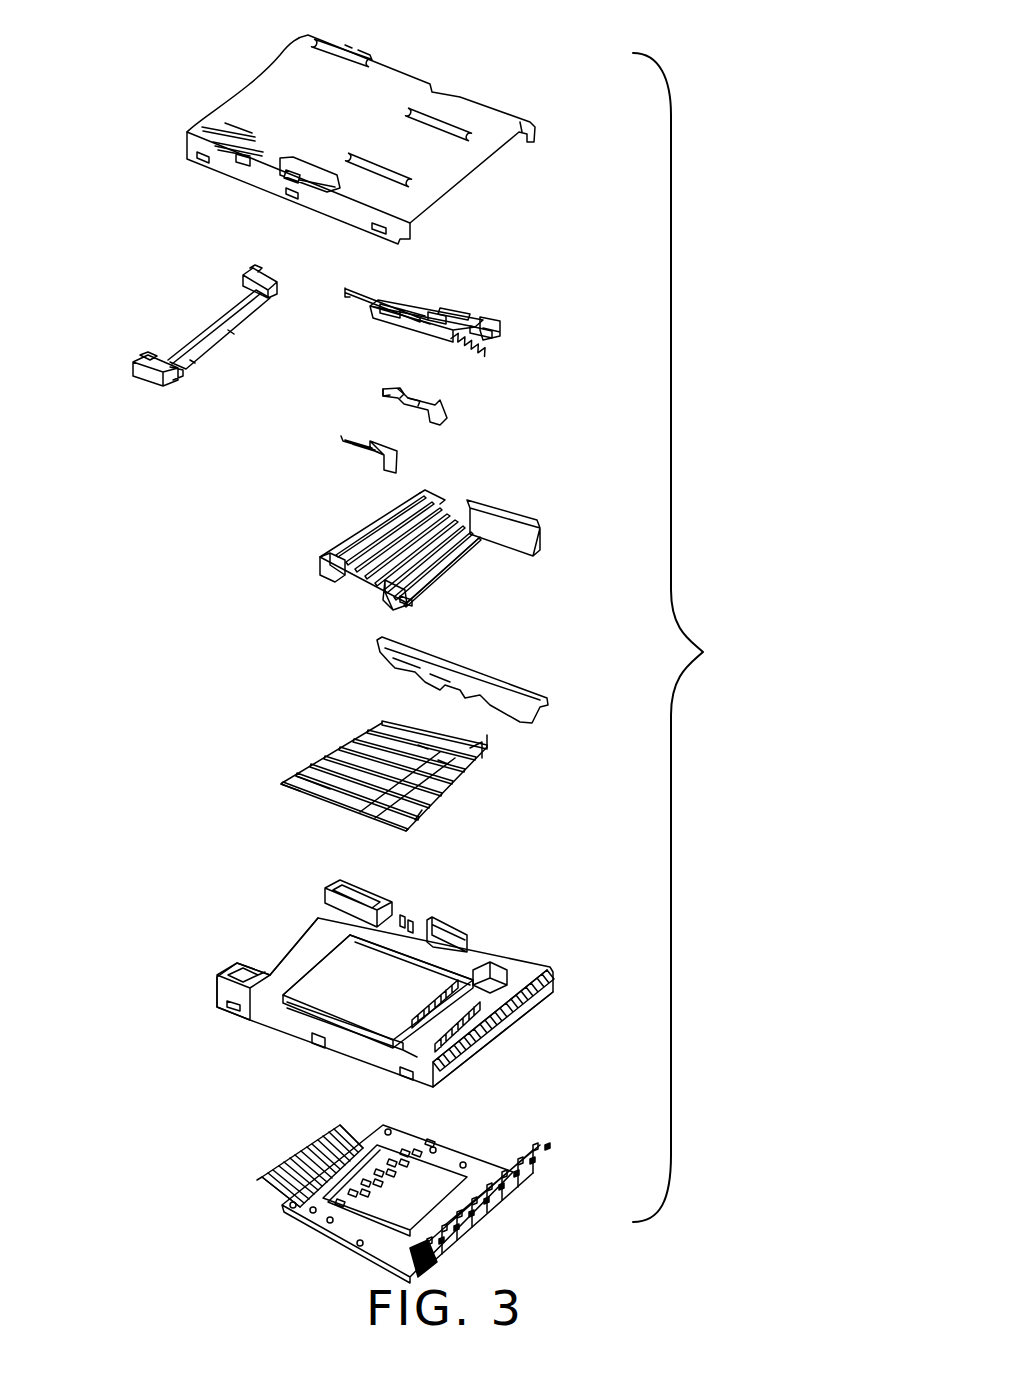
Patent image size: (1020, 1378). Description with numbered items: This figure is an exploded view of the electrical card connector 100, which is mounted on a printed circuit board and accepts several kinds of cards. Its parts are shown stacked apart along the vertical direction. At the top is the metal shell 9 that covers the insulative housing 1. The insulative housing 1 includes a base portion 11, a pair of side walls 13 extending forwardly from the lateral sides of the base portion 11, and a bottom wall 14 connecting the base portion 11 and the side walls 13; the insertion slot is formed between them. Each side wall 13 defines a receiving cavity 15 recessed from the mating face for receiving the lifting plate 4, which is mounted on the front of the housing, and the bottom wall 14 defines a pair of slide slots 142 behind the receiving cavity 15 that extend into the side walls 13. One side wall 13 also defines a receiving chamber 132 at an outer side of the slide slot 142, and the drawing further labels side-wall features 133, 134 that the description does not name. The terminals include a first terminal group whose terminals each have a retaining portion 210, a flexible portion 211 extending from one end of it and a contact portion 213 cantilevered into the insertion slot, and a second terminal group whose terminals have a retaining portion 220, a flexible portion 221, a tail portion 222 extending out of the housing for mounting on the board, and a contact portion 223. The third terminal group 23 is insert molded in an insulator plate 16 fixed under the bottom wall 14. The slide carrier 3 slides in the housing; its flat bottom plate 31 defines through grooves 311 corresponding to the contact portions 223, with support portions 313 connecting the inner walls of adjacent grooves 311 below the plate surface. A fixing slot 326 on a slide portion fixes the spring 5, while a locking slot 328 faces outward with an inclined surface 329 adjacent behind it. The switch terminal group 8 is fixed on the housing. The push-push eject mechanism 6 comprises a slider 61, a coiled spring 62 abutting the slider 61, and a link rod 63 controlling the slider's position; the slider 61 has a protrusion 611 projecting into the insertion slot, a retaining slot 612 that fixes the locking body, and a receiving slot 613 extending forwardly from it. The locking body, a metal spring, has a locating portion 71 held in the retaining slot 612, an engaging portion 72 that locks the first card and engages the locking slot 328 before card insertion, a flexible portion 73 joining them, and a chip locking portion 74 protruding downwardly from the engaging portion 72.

The electrical card connector 100 is at (694, 637).
The metal shell 9 is at (433, 61).
The lifting plate 4 is at (191, 316).
The push-push eject mechanism 6 is at (447, 310).
The link rod 63 is at (365, 290).
The slider 61 is at (447, 322).
The receiving slot 613 is at (453, 313).
The protrusion 611 is at (497, 323).
The retaining slot 612 is at (490, 340).
The coiled spring 62 is at (487, 353).
The locating portion 71 is at (443, 417).
The engaging portion 72 is at (397, 390).
The flexible portion 73 is at (410, 397).
The chip locking portion 74 is at (383, 393).
The spring 5 is at (383, 463).
The slide carrier 3 is at (389, 543).
The bottom plate 31 is at (383, 533).
The through grooves 311 is at (427, 490).
The support portions 313 is at (467, 553).
The fixing slot 326 is at (370, 573).
The locking slot 328 is at (393, 587).
The inclined surface 329 is at (410, 600).
The switch terminal group 8 is at (483, 677).
The retaining portion 220 is at (390, 823).
The flexible portion 221 is at (323, 800).
The tail portion 222 is at (420, 812).
The contact portion 223 is at (293, 783).
The retaining portion 210 is at (460, 757).
The flexible portion 211 is at (443, 763).
The contact portion 213 is at (423, 747).
The insulative housing 1 is at (369, 975).
The base portion 11 is at (530, 993).
The side walls 13 is at (297, 983).
The receiving chamber 132 is at (337, 1030).
The guide rib 133 is at (450, 927).
The recess 134 is at (227, 1007).
The bottom wall 14 is at (297, 963).
The slide slots 142 is at (423, 957).
The receiving cavity 15 is at (343, 908).
The insulator plate 16 is at (447, 1158).
The third terminal group 23 is at (533, 1162).